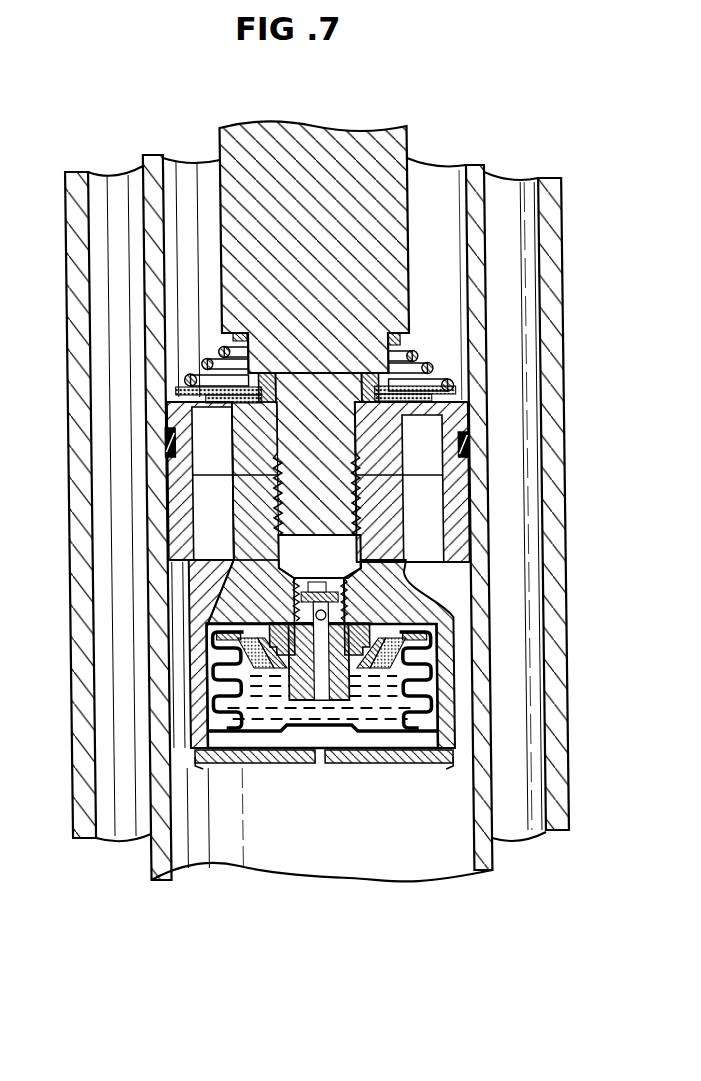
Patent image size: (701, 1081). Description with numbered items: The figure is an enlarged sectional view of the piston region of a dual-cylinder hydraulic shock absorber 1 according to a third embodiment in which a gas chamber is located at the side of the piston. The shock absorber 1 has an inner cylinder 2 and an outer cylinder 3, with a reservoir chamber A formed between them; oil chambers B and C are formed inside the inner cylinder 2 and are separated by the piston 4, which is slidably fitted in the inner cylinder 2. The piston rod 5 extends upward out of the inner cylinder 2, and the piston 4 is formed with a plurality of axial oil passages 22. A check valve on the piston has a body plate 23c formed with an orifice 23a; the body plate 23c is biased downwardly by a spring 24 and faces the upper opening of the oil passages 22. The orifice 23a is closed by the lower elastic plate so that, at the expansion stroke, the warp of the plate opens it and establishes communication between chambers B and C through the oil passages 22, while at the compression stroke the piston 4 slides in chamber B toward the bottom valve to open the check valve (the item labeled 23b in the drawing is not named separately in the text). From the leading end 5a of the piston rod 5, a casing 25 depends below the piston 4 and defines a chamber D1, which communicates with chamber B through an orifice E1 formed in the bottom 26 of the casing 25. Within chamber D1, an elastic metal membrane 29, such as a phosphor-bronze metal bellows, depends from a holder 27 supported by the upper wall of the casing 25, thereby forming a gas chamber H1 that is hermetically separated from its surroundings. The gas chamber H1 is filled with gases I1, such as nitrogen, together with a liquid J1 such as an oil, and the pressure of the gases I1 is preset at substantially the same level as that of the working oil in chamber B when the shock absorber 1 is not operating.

The shock absorber 1 is at (568, 262).
The inner cylinder 2 is at (166, 856).
The outer cylinder 3 is at (72, 588).
The piston 4 is at (172, 409).
The piston rod 5 is at (305, 143).
The leading end of piston rod 5a is at (298, 514).
The axial oil passages 22 is at (424, 430).
The orifice 23a is at (418, 372).
The valve disc (compression side) 23b is at (196, 380).
The body plate 23c is at (178, 456).
The spring 24 is at (228, 347).
The casing 25 is at (432, 697).
The bottom of casing 26 is at (283, 762).
The holder 27 is at (240, 620).
The elastic metal membrane 29 is at (222, 737).
The reservoir chamber A is at (125, 262).
The oil chamber B is at (366, 858).
The oil chamber C is at (432, 186).
The gases I1 is at (404, 652).
The gas chamber H1 is at (254, 720).
The orifice E1 is at (317, 760).
The liquid J1 is at (383, 733).
The chamber D1 is at (418, 740).